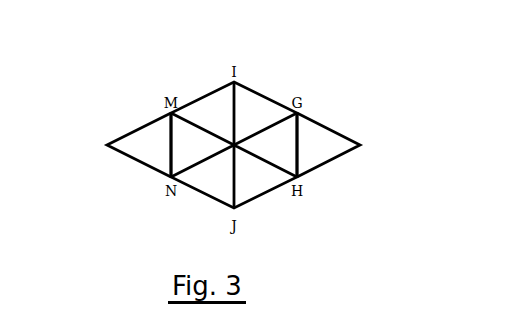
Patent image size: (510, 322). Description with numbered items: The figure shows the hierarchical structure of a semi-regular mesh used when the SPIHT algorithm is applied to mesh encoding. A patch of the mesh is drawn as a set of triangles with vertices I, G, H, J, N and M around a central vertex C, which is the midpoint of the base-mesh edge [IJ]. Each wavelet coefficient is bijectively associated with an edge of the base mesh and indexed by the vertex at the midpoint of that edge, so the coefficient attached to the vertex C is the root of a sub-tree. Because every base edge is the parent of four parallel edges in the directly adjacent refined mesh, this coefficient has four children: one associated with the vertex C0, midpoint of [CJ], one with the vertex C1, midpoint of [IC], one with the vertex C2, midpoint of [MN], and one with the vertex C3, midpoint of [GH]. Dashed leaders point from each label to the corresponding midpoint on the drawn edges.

The vertex C is at (238, 149).
The vertex C0 is at (228, 178).
The vertex C1 is at (238, 107).
The vertex C2 is at (170, 139).
The vertex C3 is at (300, 153).